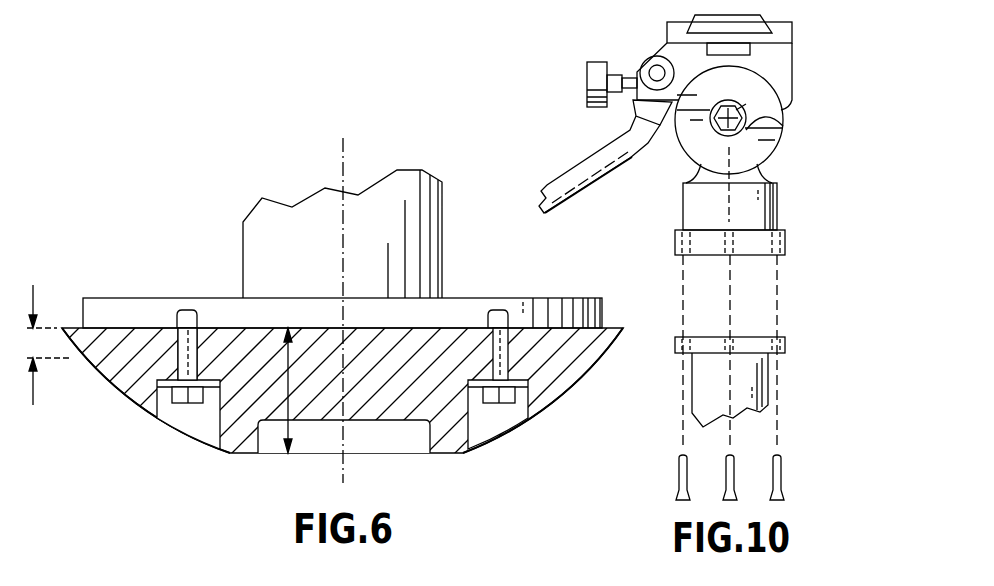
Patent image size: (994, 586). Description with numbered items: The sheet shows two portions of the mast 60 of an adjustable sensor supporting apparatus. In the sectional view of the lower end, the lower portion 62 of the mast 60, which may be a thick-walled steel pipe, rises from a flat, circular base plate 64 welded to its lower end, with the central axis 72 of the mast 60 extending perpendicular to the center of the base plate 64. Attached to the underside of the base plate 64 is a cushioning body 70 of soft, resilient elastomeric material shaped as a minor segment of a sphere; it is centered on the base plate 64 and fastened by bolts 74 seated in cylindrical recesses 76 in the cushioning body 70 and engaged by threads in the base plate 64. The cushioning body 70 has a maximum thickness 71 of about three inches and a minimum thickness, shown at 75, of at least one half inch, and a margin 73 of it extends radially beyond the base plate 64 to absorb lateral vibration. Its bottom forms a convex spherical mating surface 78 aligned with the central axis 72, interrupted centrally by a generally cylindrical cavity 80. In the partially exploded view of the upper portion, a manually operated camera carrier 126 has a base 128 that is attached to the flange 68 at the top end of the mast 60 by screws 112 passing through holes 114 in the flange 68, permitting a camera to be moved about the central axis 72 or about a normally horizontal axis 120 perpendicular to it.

In FIG. 6, the mast 60 is at (443, 210).
In FIG. 6, the lower portion of the mast 62 is at (423, 270).
In FIG. 10, the lower portion of the mast 62 is at (768, 390).
In FIG. 6, the base plate 64 is at (542, 298).
In FIG. 10, the flange 68 is at (750, 353).
In FIG. 6, the cushioning body 70 is at (598, 355).
In FIG. 6, the maximum thickness 71 is at (285, 427).
In FIG. 6, the central axis 72 is at (343, 152).
In FIG. 10, the central axis 72 is at (730, 203).
In FIG. 6, the margin of the cushioning body 73 is at (612, 327).
In FIG. 6, the bolts 74 is at (177, 407).
In FIG. 6, the minimum thickness 75 is at (33, 296).
In FIG. 6, the cylindrical recesses 76 is at (203, 430).
In FIG. 6, the mating surface 78 is at (563, 398).
In FIG. 6, the cylindrical cavity 80 is at (393, 442).
In FIG. 10, the screws 112 is at (783, 475).
In FIG. 10, the holes 114 is at (787, 345).
In FIG. 10, the horizontal axis 120 is at (783, 107).
In FIG. 10, the manually operated camera carrier 126 is at (778, 200).
In FIG. 10, the base of the camera carrier 128 is at (747, 255).